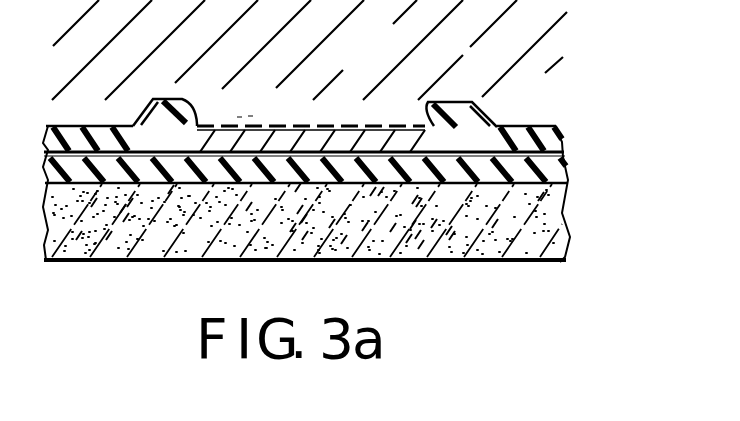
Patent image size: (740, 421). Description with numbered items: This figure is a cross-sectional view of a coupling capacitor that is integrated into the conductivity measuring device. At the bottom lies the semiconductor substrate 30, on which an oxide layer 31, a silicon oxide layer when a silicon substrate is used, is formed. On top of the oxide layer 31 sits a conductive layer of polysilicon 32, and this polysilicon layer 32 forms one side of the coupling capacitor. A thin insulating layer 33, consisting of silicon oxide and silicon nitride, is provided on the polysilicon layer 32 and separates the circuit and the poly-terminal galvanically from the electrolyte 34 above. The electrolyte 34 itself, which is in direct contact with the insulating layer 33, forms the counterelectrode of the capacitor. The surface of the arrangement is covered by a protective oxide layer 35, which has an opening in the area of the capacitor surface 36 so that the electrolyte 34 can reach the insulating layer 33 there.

The semiconductor substrate 30 is at (570, 237).
The oxide layer 31 is at (568, 180).
The polysilicon layer 32 is at (483, 120).
The insulating layer 33 is at (567, 153).
The electrolyte 34 is at (380, 60).
The protective oxide layer 35 is at (563, 141).
The capacitor surface 36 is at (268, 98).